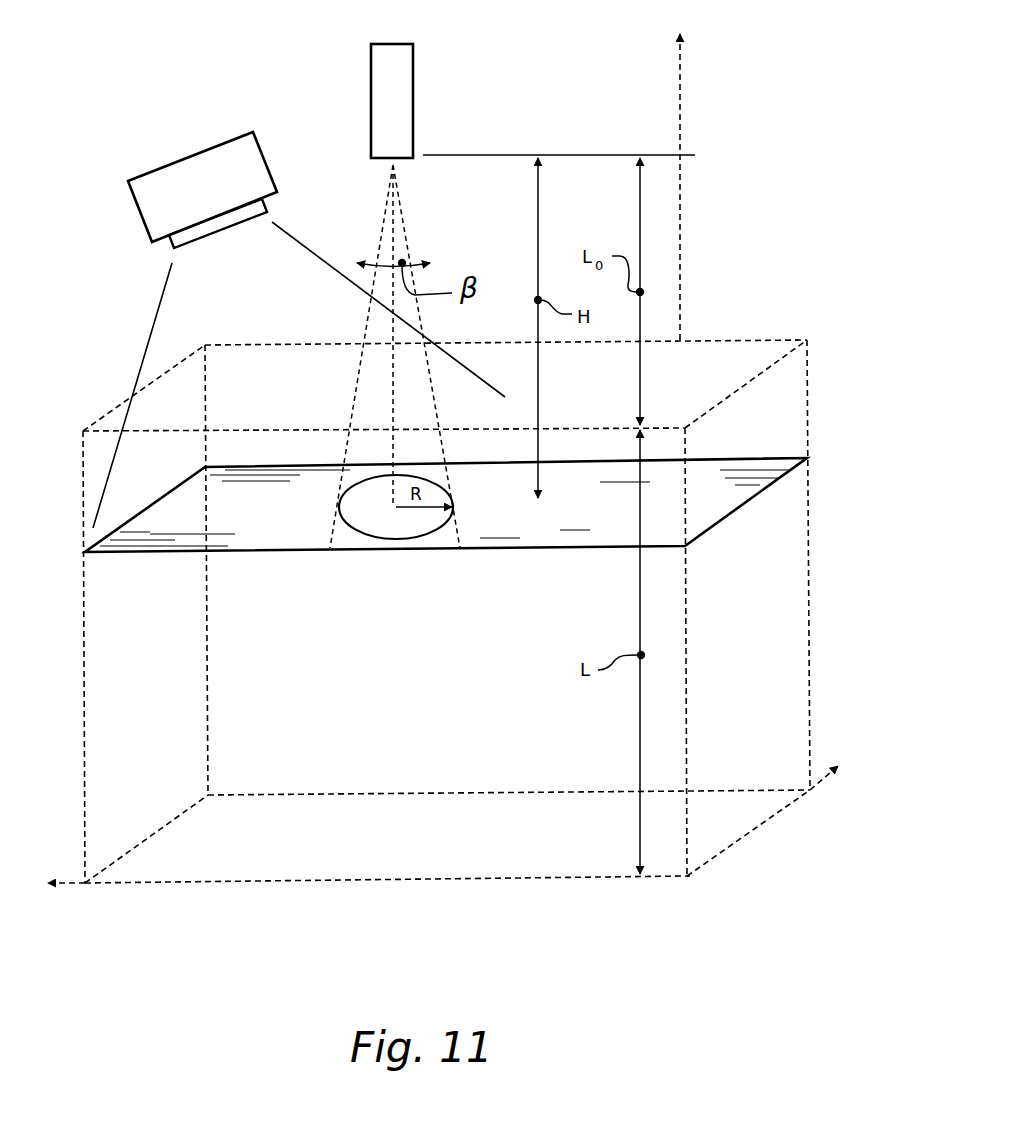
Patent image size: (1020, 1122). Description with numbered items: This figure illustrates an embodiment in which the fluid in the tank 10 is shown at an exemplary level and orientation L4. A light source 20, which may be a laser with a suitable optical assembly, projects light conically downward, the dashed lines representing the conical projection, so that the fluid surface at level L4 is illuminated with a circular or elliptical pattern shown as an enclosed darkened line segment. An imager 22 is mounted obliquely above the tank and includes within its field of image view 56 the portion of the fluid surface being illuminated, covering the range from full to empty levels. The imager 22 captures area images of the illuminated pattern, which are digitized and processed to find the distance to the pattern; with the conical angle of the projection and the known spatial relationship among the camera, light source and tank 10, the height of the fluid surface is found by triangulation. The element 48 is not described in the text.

The tank 10 is at (264, 812).
The light source 20 is at (413, 82).
The imager 22 is at (142, 167).
The container bottom 48 is at (687, 876).
The field of image view 56 is at (338, 278).
The fluid level and orientation L4 is at (722, 518).